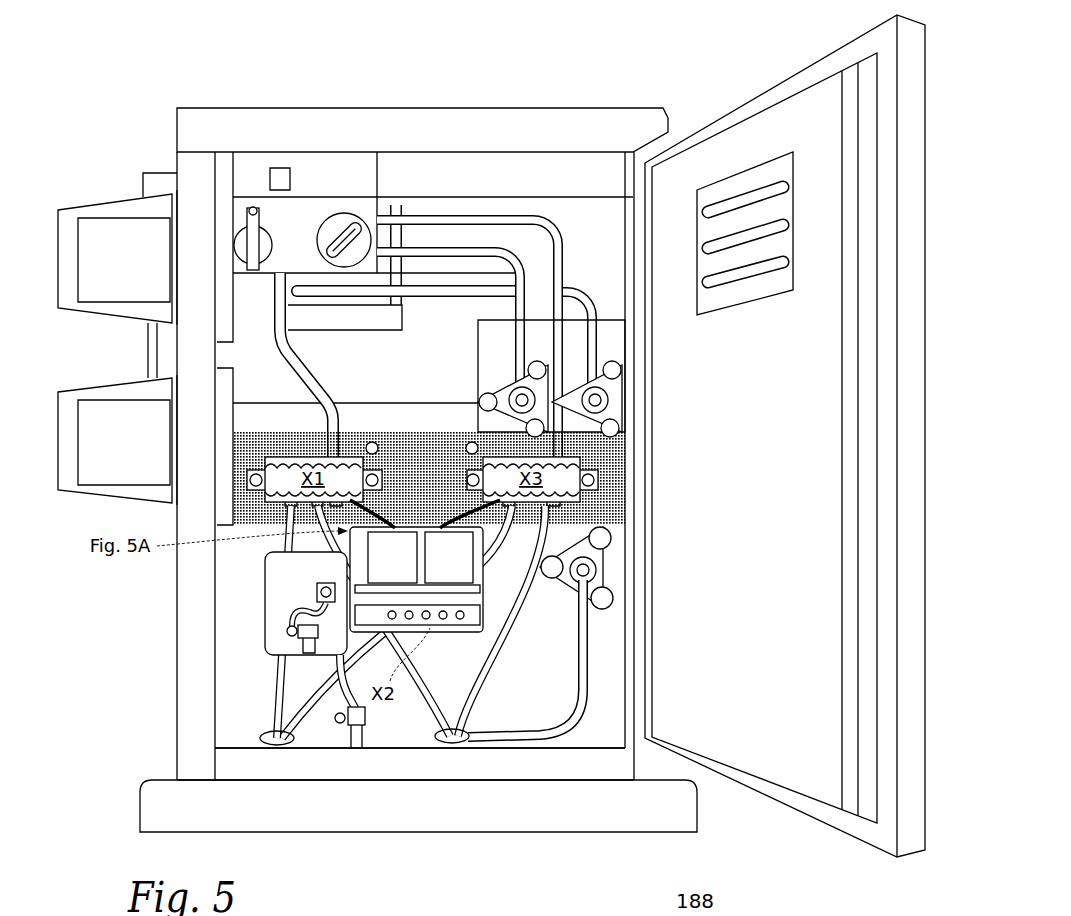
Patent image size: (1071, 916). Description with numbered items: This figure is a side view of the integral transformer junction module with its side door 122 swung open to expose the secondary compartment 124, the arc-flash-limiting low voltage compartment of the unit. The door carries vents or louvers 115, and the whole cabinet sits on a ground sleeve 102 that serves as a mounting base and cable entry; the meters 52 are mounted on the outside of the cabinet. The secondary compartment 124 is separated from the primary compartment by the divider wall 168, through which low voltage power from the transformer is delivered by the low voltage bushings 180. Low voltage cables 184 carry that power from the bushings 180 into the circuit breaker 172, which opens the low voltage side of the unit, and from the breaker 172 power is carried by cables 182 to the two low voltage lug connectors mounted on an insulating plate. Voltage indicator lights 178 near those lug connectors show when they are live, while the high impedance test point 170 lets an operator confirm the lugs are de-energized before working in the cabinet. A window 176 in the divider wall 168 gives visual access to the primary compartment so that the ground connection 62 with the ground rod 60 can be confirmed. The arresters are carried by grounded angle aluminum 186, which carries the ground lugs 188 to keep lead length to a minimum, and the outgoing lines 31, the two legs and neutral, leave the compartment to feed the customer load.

The secondary compartment 124 is at (257, 108).
The circuit breaker 172 is at (345, 213).
The high impedance test point 170 is at (250, 207).
The cables 182 is at (482, 215).
The low voltage cables 184 is at (456, 255).
The voltage indicator lights 178 is at (467, 442).
The ground lugs 188 is at (440, 525).
The low voltage bushings 180 is at (540, 412).
The vents or louvers 115 is at (748, 205).
The side door 122 is at (785, 88).
The meters 52 is at (117, 339).
The window 176 is at (297, 577).
The ground connection 62 is at (316, 592).
The ground rod 60 is at (290, 633).
The lines 31 is at (295, 742).
The divider wall 168 is at (612, 690).
The ground sleeve 102 is at (168, 800).
The grounded angle aluminum 186 is at (480, 590).